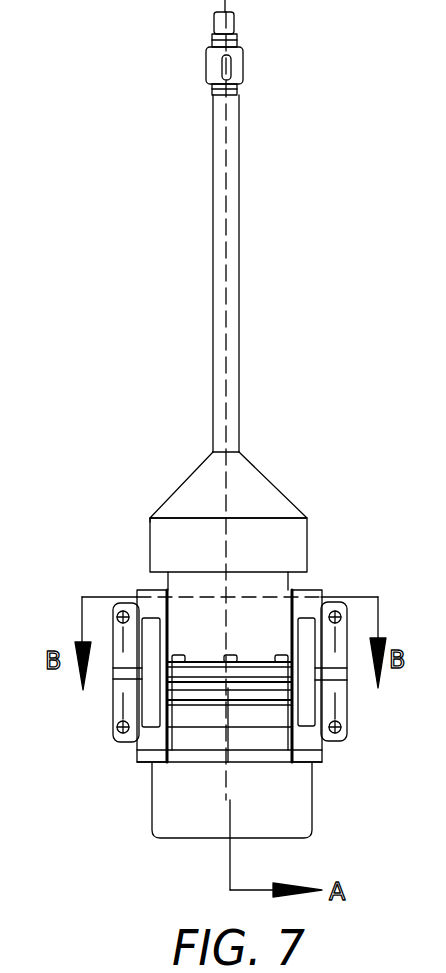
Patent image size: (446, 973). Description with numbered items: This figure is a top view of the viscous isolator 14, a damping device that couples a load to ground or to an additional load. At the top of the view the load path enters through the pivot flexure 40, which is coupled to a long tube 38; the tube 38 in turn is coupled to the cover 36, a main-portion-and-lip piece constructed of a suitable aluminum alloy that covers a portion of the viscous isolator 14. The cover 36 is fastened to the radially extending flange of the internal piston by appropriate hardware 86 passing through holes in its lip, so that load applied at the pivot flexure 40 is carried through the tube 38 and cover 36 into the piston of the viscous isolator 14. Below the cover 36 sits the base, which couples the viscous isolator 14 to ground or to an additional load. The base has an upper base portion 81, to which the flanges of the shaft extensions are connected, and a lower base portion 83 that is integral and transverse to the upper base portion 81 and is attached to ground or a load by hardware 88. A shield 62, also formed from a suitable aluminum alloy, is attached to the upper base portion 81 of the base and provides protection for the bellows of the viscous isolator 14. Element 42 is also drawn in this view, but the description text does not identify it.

The viscous isolator 14 is at (180, 147).
The pivot flexure 40 is at (243, 47).
The tube 38 is at (239, 242).
The cover 36 is at (277, 483).
The upper base portion 81 is at (150, 610).
The lower base portion 83 is at (112, 638).
The hardware 88 is at (115, 725).
The hardware 86 is at (228, 658).
The filter stack 42 is at (268, 705).
The shield 62 is at (303, 838).